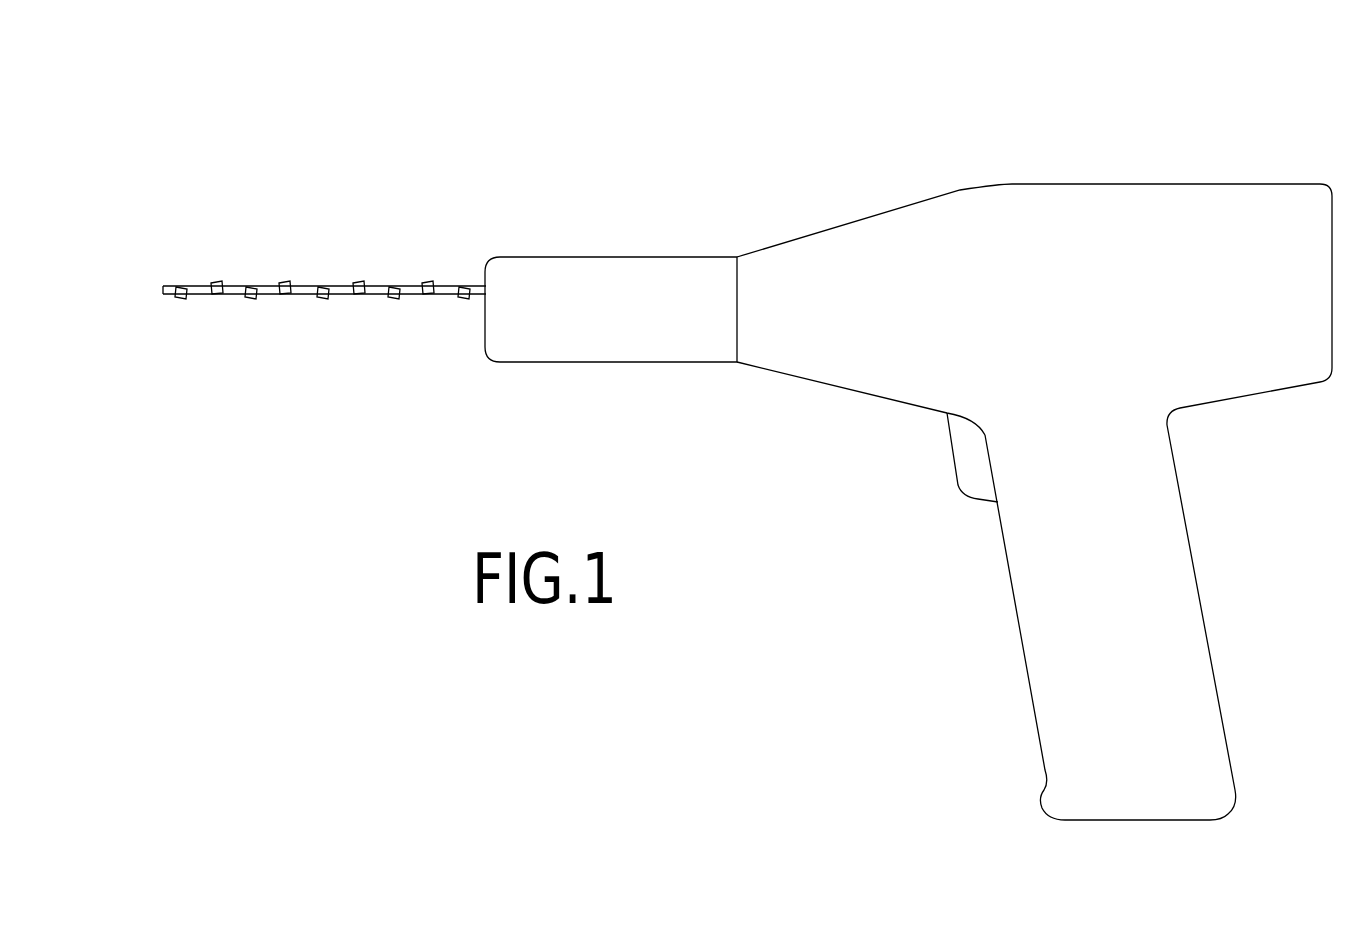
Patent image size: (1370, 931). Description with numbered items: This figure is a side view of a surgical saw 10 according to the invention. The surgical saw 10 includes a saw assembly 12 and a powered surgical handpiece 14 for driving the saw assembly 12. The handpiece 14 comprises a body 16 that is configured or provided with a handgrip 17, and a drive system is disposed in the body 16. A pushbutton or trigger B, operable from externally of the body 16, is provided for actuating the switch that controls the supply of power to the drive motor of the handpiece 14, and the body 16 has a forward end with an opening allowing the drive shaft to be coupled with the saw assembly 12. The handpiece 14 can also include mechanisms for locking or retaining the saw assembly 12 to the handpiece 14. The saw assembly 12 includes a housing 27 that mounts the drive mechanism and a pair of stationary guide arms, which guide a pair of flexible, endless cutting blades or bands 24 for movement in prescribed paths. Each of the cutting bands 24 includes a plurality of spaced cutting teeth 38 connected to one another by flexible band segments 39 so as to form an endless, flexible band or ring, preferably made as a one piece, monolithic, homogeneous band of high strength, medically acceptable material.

The surgical saw 10 is at (775, 158).
The saw assembly 12 is at (594, 363).
The powered surgical handpiece 14 is at (1162, 173).
The body 16 is at (1212, 358).
The handgrip 17 is at (1015, 607).
The cutting bands 24 is at (268, 284).
The housing 27 is at (573, 277).
The cutting teeth 38 is at (362, 283).
The band segments 39 is at (338, 284).
The trigger B is at (962, 457).